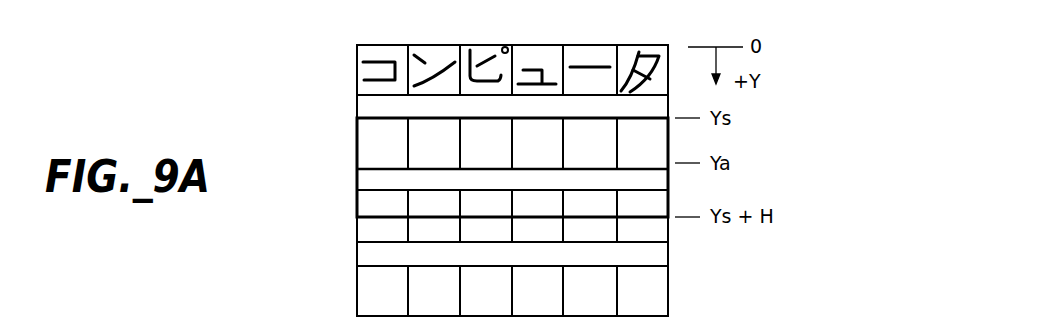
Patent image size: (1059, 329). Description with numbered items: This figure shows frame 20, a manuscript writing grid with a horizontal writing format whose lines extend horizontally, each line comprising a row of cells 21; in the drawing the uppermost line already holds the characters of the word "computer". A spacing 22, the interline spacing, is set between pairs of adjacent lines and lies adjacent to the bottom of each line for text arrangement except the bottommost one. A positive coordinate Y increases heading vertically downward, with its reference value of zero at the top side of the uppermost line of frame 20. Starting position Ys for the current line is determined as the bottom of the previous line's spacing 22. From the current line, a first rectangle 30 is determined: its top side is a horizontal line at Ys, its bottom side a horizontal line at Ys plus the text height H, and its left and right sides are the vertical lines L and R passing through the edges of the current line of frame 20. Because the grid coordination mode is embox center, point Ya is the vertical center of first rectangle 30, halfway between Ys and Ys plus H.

The frame 20 is at (603, 36).
The first rectangle 30 is at (357, 140).
The spacing 22 is at (657, 253).
The cell 21 is at (657, 293).